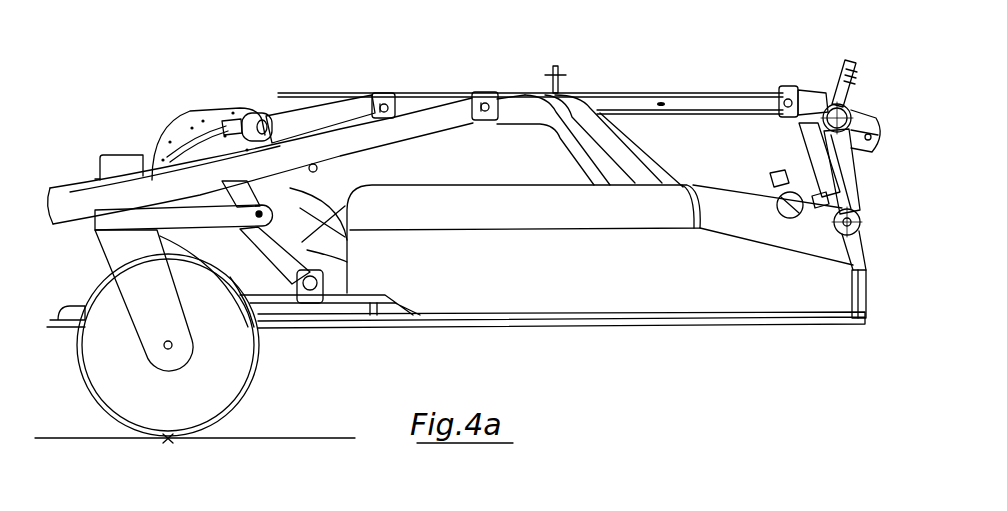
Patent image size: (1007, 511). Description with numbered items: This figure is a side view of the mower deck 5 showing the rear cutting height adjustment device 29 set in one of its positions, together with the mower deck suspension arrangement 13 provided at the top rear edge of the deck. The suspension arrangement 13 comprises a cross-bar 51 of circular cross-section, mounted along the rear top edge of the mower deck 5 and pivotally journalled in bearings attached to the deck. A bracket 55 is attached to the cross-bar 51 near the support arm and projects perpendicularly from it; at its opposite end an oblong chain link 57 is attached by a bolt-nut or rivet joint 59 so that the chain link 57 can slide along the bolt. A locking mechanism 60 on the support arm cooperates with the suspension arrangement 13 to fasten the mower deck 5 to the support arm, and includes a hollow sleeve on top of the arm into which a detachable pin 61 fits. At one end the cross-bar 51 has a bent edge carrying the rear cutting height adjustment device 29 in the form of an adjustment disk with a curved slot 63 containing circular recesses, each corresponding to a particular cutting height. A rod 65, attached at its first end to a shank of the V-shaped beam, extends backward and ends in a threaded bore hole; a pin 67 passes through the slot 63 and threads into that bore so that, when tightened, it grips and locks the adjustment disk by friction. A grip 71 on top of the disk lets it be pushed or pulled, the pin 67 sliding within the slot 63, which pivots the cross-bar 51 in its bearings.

The mower deck 5 is at (747, 343).
The mower deck suspension arrangement 13 is at (866, 194).
The rear cutting height adjustment device 29 is at (807, 122).
The cross-bar 51 is at (779, 212).
The bracket 55 is at (834, 230).
The chain link 57 is at (862, 168).
The bolt-nut or rivet joint 59 is at (855, 250).
The locking mechanism 60 is at (853, 107).
The detachable pin 61 is at (870, 118).
The curved slot 63 is at (823, 100).
The rod 65 is at (702, 105).
The pin 67 is at (781, 97).
The grip 71 is at (846, 60).